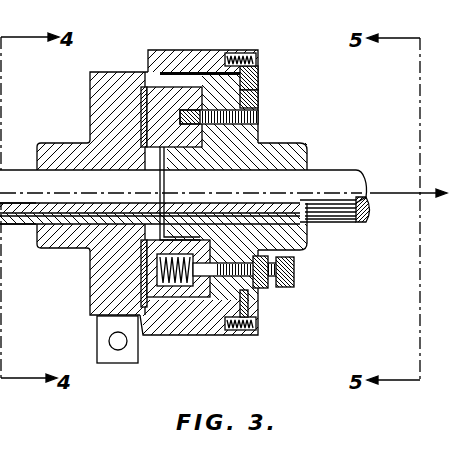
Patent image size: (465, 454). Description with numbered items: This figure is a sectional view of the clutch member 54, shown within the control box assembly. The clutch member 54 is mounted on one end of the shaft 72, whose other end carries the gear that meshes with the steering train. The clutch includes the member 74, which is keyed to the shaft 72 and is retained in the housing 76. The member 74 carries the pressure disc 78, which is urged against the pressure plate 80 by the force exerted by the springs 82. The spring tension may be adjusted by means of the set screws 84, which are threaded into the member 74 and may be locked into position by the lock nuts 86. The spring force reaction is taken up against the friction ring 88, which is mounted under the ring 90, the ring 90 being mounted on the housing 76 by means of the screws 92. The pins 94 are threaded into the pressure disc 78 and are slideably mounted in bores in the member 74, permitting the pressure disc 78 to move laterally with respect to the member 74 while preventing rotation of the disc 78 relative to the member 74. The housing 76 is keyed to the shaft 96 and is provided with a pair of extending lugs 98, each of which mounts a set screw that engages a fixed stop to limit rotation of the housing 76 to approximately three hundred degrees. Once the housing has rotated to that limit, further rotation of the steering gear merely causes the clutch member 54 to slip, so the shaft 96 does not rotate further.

The clutch member 54 is at (144, 40).
The shaft 72 is at (334, 172).
The member 74 is at (287, 147).
The housing 76 is at (123, 80).
The pressure disc 78 is at (183, 72).
The pressure plate 80 is at (144, 110).
The springs 82 is at (165, 330).
The set screws 84 is at (295, 268).
The lock nuts 86 is at (265, 288).
The friction ring 88 is at (260, 93).
The ring 90 is at (260, 74).
The screws 92 is at (262, 53).
The pins 94 is at (212, 126).
The shaft 96 is at (16, 170).
The extending lugs 98 is at (97, 340).